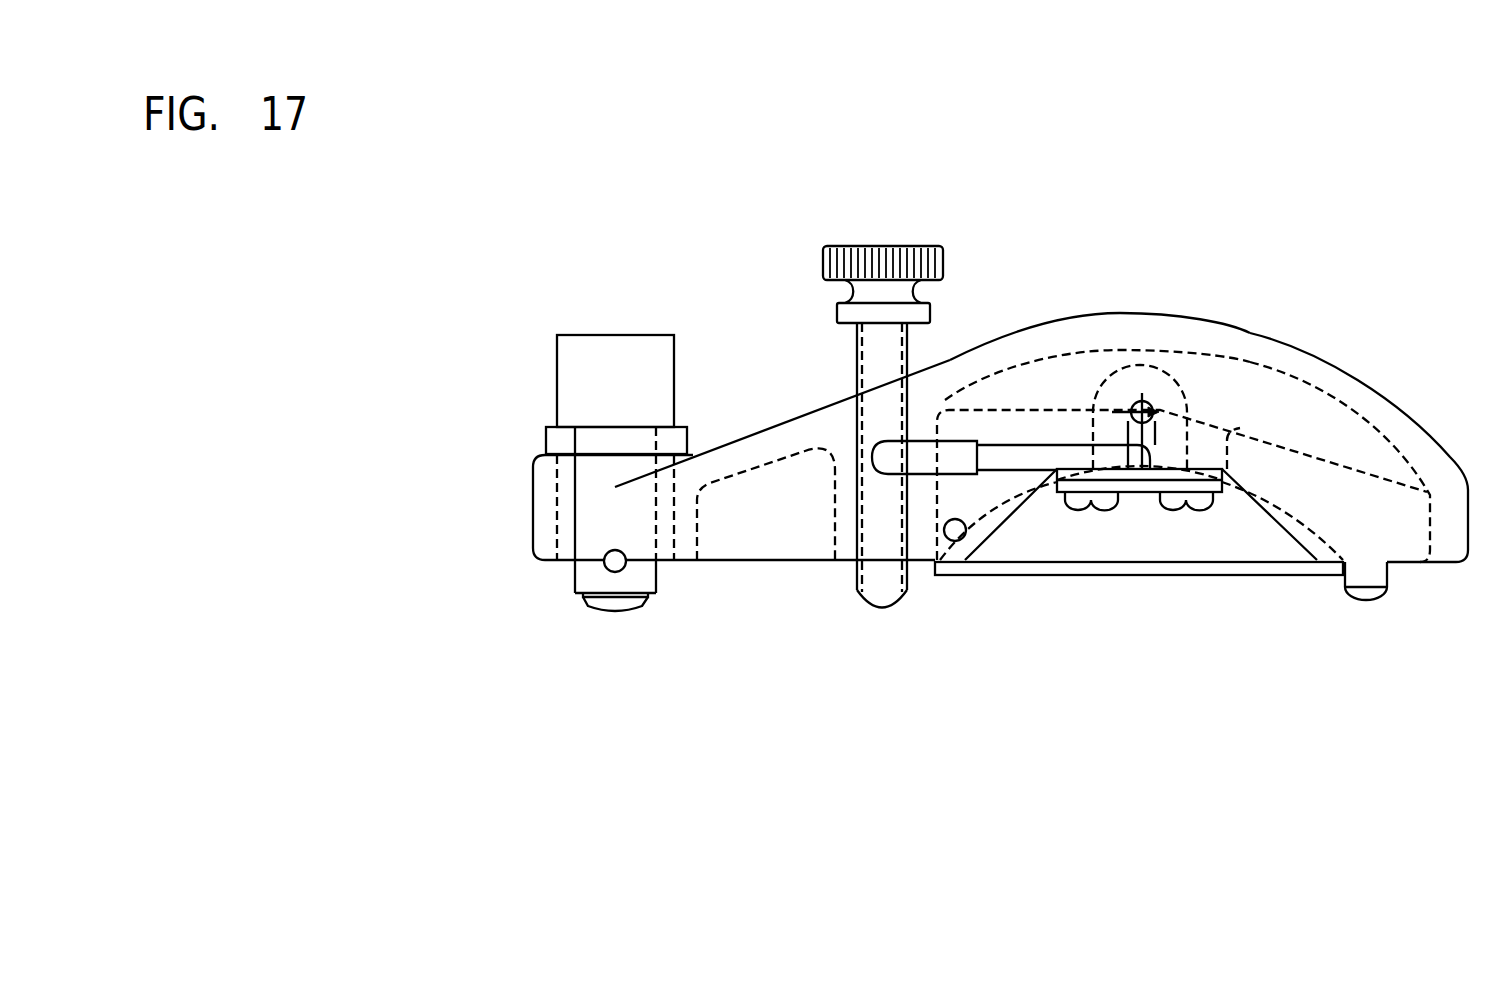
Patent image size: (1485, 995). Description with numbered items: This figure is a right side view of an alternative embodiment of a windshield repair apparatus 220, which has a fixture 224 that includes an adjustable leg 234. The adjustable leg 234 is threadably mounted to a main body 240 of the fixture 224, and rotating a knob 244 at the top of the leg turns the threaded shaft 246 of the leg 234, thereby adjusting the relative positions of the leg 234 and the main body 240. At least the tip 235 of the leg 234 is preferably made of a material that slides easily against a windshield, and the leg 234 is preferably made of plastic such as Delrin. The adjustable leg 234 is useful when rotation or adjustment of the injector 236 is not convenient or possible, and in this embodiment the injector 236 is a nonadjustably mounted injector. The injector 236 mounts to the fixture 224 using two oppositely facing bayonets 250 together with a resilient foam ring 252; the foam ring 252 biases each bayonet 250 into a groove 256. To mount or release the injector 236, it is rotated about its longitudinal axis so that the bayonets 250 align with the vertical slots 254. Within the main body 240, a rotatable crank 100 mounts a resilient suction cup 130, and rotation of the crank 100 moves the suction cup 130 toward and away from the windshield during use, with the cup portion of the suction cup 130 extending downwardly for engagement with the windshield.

The windshield repair apparatus 220 is at (673, 197).
The fixture 224 is at (1190, 317).
The main body 240 is at (1348, 370).
The adjustable leg 234 is at (905, 247).
The knob 244 is at (825, 262).
The threaded shaft 246 is at (858, 365).
The tip 235 is at (882, 607).
The injector 236 is at (555, 372).
The resilient foam ring 252 is at (545, 438).
The groove 256 is at (611, 550).
The bayonet 250 is at (624, 568).
The vertical slot 254 is at (557, 520).
The crank 100 is at (1013, 447).
The suction cup 130 is at (1135, 575).